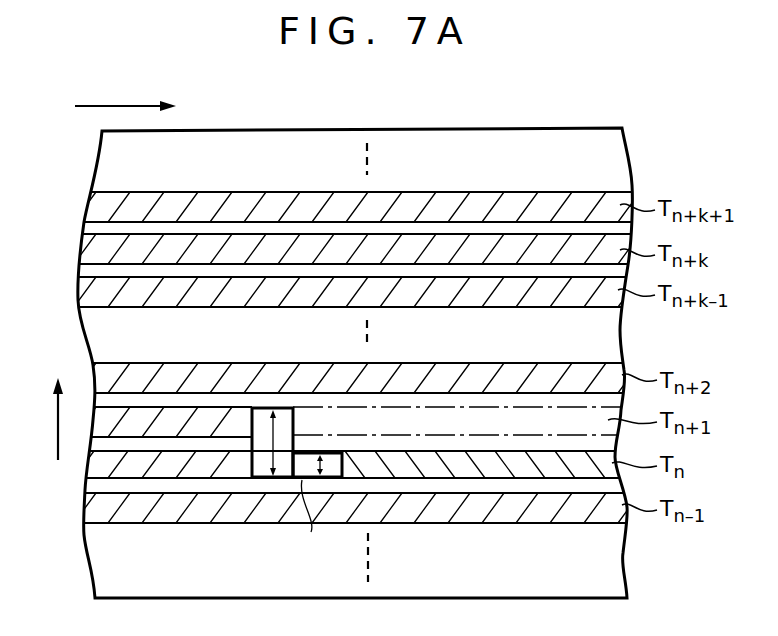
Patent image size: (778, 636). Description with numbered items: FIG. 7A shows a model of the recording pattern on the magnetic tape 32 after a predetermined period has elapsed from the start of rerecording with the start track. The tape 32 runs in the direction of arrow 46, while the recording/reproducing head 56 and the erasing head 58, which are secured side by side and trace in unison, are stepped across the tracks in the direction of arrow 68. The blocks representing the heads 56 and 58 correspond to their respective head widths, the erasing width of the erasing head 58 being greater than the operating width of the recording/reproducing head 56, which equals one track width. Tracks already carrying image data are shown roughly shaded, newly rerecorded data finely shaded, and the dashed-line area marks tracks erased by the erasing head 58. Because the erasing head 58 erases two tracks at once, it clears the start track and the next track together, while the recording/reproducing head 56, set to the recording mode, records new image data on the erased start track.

The magnetic tape 32 is at (580, 128).
The arrow 46 is at (110, 105).
The arrow 68 is at (57, 420).
The erasing head 58 is at (263, 408).
The recording/reproducing head 56 is at (312, 452).